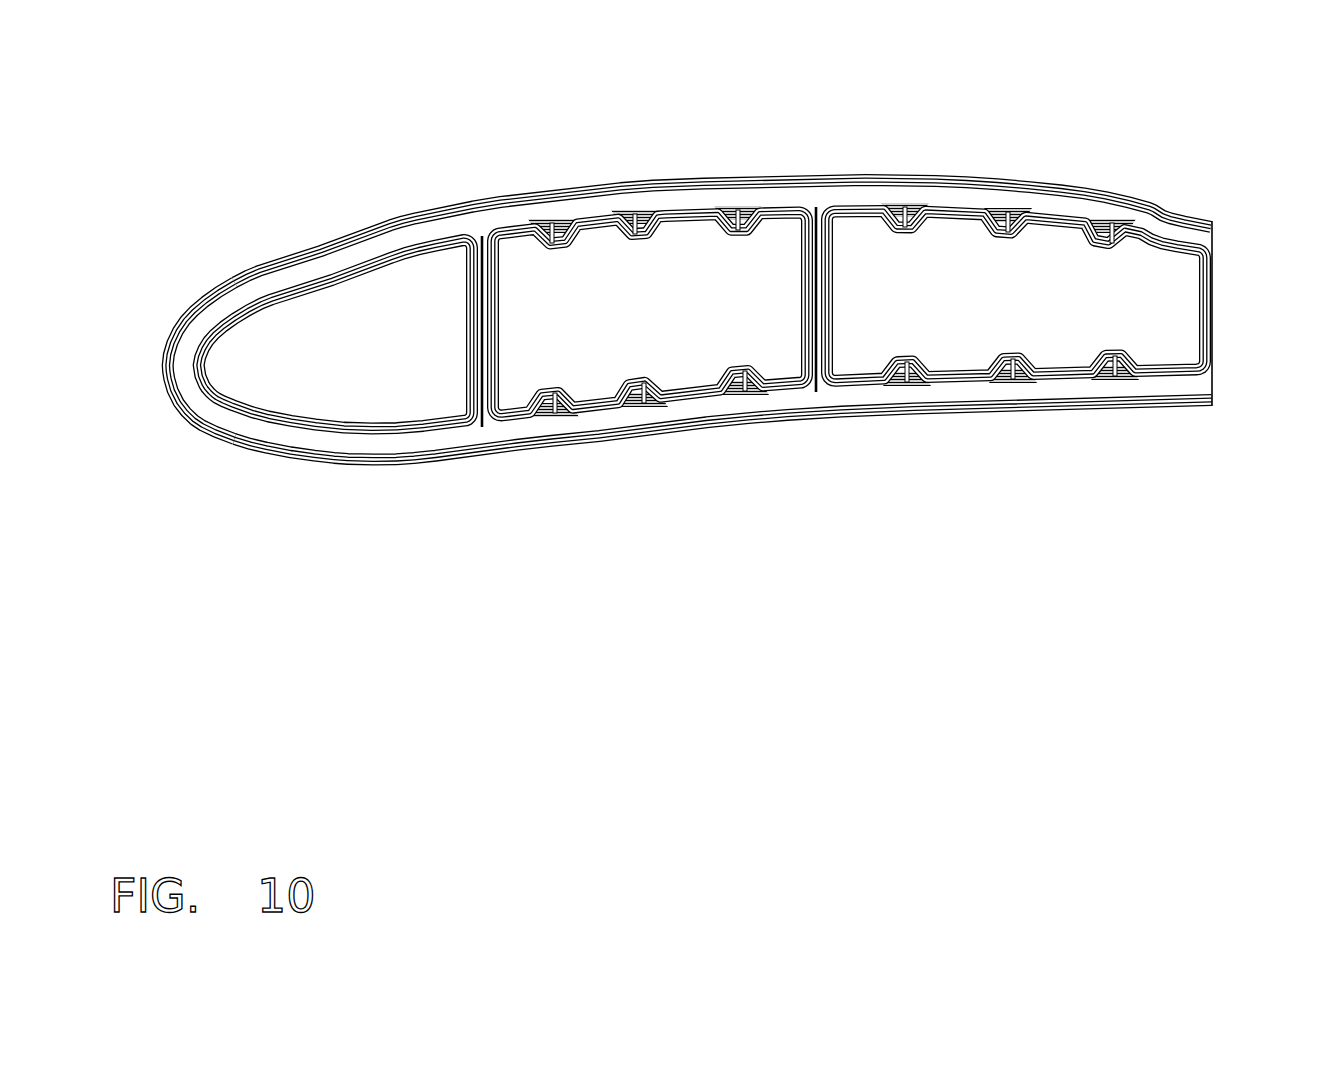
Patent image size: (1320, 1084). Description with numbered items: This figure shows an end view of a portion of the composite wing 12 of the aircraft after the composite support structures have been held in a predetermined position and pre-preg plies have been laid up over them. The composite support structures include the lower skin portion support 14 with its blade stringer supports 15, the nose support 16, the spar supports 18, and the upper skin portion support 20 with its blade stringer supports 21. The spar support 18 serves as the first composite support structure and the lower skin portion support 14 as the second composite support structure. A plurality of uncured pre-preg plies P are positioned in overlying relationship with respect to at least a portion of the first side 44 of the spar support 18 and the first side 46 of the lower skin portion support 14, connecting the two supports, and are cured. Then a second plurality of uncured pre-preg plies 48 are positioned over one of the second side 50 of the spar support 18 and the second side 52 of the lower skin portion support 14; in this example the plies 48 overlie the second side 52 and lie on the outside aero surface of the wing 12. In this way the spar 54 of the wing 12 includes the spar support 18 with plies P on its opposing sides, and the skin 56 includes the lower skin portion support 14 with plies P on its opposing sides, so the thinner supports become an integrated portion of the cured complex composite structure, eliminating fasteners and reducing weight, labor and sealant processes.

The wing 12 is at (511, 134).
The lower skin portion support 14 is at (960, 401).
The blade stringer supports 15 is at (651, 396).
The nose support 16 is at (183, 358).
The spar support 18 is at (478, 288).
The upper skin portion support 20 is at (950, 194).
The blade stringer supports 21 is at (632, 218).
The first side 44 is at (478, 318).
The first side 46 is at (1170, 373).
The second plurality of uncured pre-preg plies 48 is at (1151, 419).
The second side 50 is at (478, 349).
The second side 52 is at (1046, 388).
The spar 54 is at (848, 296).
The skin 56 is at (831, 428).
The plurality of uncured pre-preg plies P is at (795, 292).